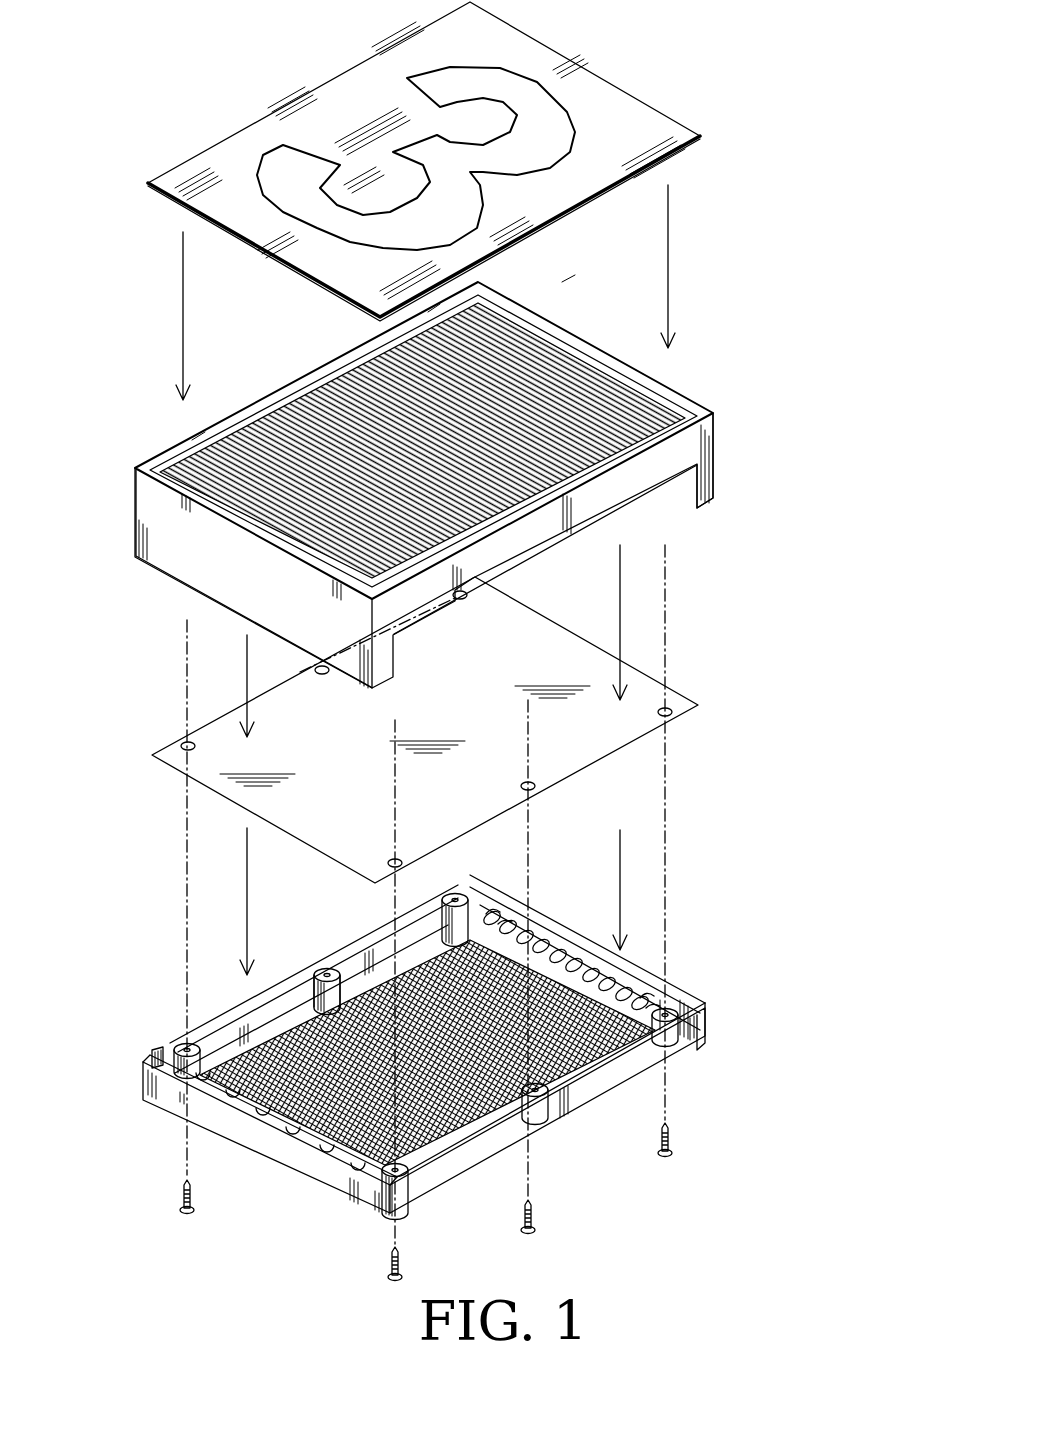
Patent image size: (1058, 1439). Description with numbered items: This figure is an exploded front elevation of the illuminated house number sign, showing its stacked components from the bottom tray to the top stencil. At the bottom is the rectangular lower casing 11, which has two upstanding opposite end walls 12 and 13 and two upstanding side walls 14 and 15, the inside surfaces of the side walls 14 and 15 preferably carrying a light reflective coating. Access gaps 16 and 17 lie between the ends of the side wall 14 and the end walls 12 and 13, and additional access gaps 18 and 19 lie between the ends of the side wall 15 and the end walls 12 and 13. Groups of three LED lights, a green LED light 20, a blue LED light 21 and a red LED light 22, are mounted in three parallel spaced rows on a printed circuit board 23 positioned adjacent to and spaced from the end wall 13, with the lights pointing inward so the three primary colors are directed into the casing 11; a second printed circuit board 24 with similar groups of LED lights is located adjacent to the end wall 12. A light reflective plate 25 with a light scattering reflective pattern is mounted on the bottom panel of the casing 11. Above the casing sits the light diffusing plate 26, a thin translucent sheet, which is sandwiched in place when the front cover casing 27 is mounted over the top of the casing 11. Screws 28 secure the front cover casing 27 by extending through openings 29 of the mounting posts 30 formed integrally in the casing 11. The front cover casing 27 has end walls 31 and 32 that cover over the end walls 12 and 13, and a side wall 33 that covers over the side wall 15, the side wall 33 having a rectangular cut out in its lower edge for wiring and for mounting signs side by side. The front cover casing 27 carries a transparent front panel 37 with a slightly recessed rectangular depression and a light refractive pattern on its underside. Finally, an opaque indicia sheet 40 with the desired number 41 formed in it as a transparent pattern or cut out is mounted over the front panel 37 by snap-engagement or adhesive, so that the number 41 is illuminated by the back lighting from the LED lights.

The lower casing 11 is at (730, 1018).
The end wall 12 is at (170, 1110).
The end wall 13 is at (702, 1028).
The side wall 14 is at (368, 952).
The side wall 15 is at (615, 1085).
The access gap 16 is at (178, 1046).
The access gap 17 is at (470, 893).
The access gap 18 is at (402, 1210).
The access gap 19 is at (680, 1052).
The LED light 20 is at (492, 912).
The LED light 21 is at (512, 918).
The LED light 22 is at (522, 930).
The printed circuit board 23 is at (704, 1046).
The second printed circuit board 24 is at (150, 1056).
The light reflective plate 25 is at (322, 1146).
The light diffusing plate 26 is at (164, 750).
The front cover casing 27 is at (602, 347).
The screws 28 is at (178, 1200).
The openings 29 is at (326, 971).
The mounting posts 30 is at (318, 982).
The end wall 31 is at (162, 556).
The end wall 32 is at (698, 488).
The side wall 33 is at (540, 540).
The transparent front panel 37 is at (293, 405).
The opaque indicia sheet 40 is at (707, 105).
The desired number 41 is at (513, 88).